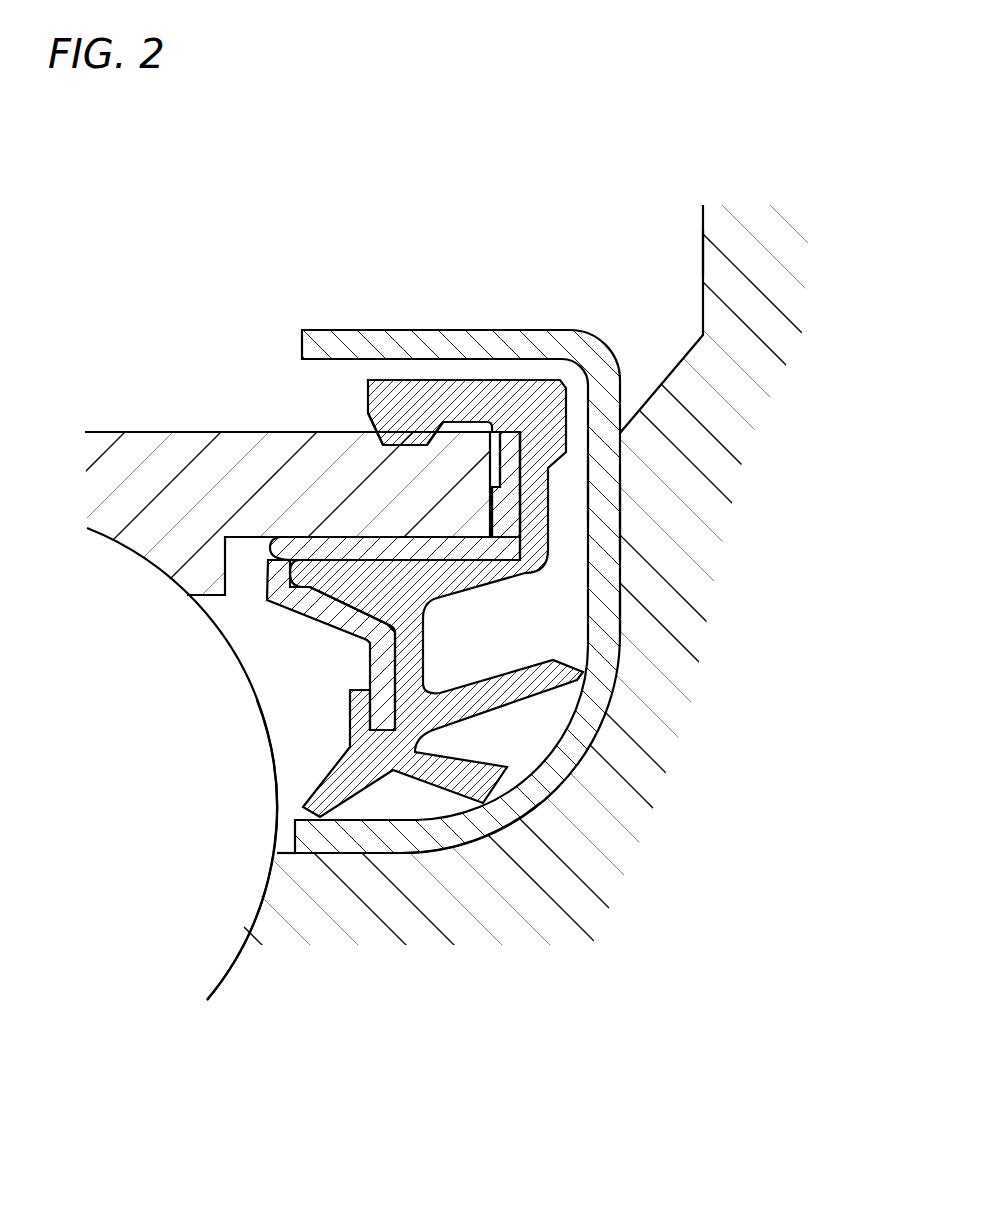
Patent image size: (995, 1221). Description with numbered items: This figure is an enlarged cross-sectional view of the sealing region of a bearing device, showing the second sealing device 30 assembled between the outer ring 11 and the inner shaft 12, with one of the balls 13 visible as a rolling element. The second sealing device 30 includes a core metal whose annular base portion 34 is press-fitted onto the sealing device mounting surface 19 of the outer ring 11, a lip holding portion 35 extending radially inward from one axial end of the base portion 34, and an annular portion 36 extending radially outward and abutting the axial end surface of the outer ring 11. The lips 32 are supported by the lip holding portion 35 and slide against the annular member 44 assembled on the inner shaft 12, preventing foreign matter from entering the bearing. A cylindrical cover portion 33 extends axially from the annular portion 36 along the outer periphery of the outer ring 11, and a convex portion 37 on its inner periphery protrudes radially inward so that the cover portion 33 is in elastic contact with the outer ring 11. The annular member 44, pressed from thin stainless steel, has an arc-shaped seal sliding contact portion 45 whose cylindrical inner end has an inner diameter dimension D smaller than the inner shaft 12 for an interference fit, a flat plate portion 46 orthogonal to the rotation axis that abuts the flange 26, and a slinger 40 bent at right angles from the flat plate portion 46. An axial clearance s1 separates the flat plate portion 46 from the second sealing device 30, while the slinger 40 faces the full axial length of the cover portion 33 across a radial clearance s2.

The outer ring 11 is at (150, 507).
The inner shaft 12 is at (506, 913).
The balls 13 is at (197, 937).
The sealing device mounting surface 19 is at (267, 578).
The flange 26 is at (703, 250).
The second sealing device 30 is at (650, 332).
The lips 32 is at (585, 730).
The cover portion 33 is at (387, 383).
The base portion 34 is at (340, 547).
The lip holding portion 35 is at (320, 617).
The annular portion 36 is at (513, 457).
The convex portion 37 is at (392, 440).
The slinger 40 is at (423, 330).
The annular member 44 is at (628, 620).
The seal sliding contact portion 45 is at (555, 792).
The flat plate portion 46 is at (620, 518).
The clearance s1 is at (568, 492).
The clearance s2 is at (500, 367).
The inner diameter dimension D is at (355, 853).